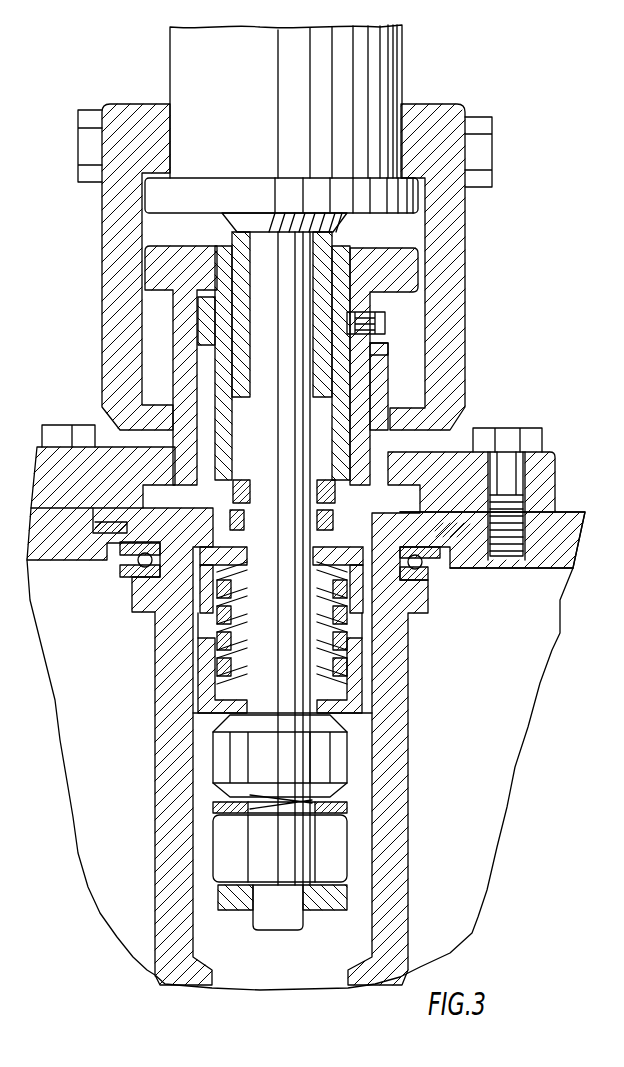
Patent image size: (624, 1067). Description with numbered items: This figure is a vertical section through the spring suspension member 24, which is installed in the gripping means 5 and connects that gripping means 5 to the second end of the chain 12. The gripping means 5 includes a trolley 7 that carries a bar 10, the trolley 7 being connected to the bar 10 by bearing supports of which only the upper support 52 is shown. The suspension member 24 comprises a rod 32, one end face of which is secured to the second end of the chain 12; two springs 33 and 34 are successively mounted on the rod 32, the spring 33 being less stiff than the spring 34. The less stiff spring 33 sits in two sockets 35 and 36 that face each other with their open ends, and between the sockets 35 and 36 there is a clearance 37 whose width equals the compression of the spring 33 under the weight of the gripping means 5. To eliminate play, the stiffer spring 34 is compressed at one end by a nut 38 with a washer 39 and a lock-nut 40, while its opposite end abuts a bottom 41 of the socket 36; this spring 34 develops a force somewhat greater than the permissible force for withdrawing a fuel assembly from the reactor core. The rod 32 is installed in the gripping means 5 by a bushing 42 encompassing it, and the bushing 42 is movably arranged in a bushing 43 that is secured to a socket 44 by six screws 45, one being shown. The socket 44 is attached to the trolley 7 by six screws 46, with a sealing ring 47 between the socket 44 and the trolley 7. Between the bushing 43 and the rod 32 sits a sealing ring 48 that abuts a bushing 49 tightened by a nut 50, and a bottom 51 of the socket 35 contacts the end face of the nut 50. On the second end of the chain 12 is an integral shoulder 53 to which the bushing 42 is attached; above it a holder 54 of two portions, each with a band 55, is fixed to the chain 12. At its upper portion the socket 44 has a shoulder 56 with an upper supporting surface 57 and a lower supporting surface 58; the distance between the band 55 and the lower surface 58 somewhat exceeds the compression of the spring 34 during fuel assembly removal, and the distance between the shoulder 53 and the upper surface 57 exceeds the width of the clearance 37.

The gripping means 5 is at (140, 620).
The trolley 7 is at (567, 512).
The bar 10 is at (402, 782).
The chain 12 is at (178, 60).
The spring suspension member 24 is at (195, 233).
The rod 32 is at (258, 308).
The spring 33 is at (215, 632).
The spring 34 is at (230, 727).
The socket 35 is at (375, 628).
The socket 36 is at (355, 700).
The clearance 37 is at (362, 652).
The nut 38 is at (337, 867).
The washer 39 is at (350, 812).
The lock-nut 40 is at (335, 910).
The bottom 41 is at (358, 720).
The bushing 42 is at (320, 366).
The bushing 43 is at (223, 375).
The socket 44 is at (380, 372).
The screw 45 is at (378, 350).
The screw 46 is at (508, 432).
The sealing ring 47 is at (467, 555).
The sealing ring 48 is at (243, 495).
The bushing 49 is at (240, 528).
The nut 50 is at (237, 547).
The bottom 51 is at (362, 545).
The upper support 52 is at (436, 580).
The shoulder 53 is at (222, 178).
The holder 54 is at (455, 207).
The band 55 is at (465, 420).
The shoulder 56 is at (413, 265).
The upper surface 57 is at (405, 243).
The lower surface 58 is at (397, 300).